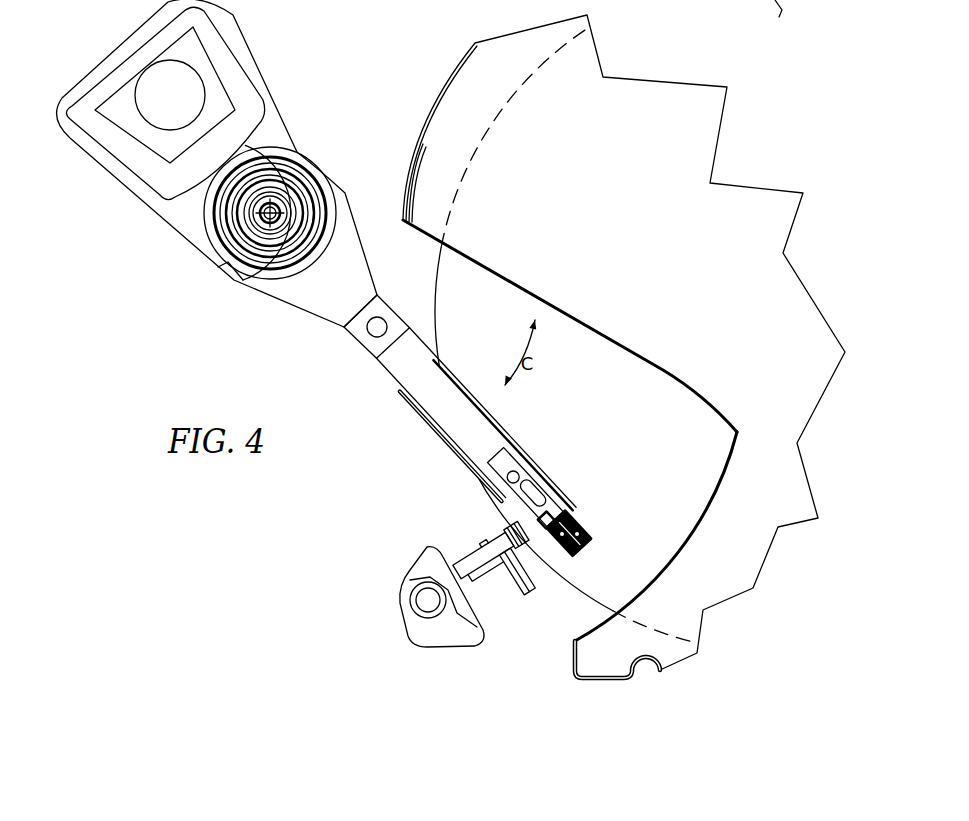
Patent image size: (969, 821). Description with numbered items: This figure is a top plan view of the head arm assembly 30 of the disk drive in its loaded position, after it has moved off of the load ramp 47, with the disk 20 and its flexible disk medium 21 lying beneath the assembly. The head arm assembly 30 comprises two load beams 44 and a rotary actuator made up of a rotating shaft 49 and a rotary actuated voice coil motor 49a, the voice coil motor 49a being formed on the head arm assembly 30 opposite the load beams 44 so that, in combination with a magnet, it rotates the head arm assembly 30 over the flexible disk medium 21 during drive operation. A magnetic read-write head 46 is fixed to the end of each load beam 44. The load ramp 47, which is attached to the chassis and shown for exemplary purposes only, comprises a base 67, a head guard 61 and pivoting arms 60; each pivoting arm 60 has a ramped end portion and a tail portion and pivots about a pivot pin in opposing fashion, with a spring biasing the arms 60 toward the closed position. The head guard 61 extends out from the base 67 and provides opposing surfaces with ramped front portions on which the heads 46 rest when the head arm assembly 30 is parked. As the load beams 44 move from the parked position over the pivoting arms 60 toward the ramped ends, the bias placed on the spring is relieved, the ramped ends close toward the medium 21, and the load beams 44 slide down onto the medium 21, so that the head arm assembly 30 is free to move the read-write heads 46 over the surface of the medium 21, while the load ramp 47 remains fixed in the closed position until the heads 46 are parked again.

The saw blade 20 is at (655, 249).
The flexible disk medium 21 is at (610, 440).
The head arm assembly 30 is at (357, 167).
The load beam 44 is at (437, 387).
The magnetic read-write head 46 is at (583, 537).
The load ramp 47 is at (497, 633).
The rotating shaft 49 is at (273, 212).
The voice coil motor 49a is at (87, 150).
The pivoting arm 60 is at (478, 523).
The head guard 61 is at (510, 602).
The base 67 is at (420, 567).